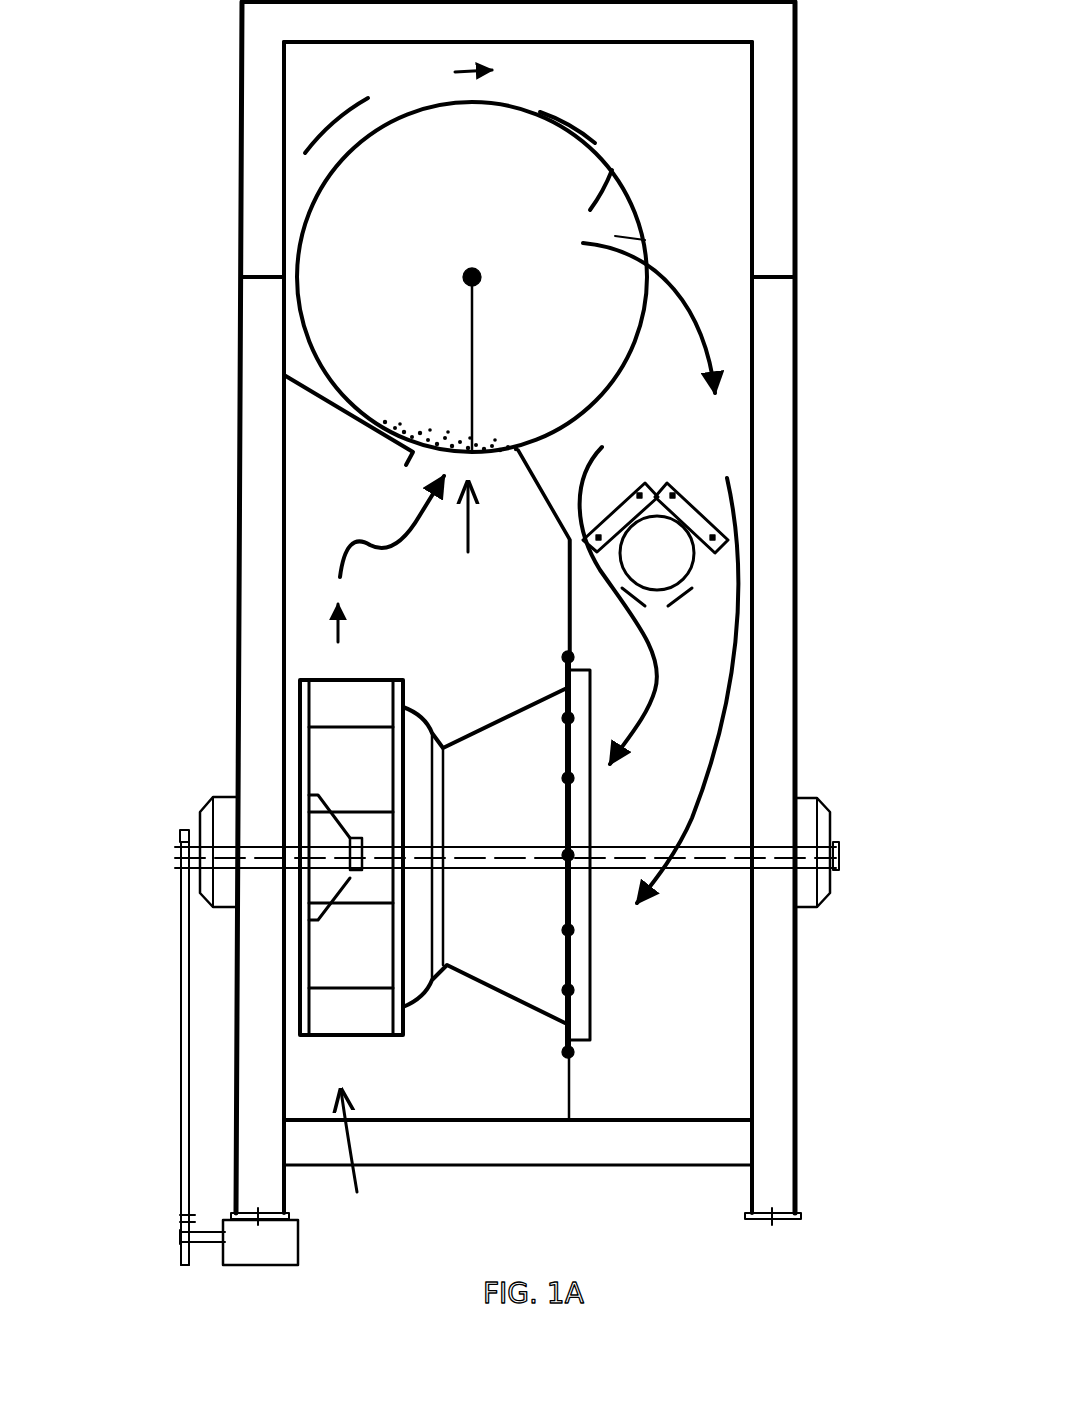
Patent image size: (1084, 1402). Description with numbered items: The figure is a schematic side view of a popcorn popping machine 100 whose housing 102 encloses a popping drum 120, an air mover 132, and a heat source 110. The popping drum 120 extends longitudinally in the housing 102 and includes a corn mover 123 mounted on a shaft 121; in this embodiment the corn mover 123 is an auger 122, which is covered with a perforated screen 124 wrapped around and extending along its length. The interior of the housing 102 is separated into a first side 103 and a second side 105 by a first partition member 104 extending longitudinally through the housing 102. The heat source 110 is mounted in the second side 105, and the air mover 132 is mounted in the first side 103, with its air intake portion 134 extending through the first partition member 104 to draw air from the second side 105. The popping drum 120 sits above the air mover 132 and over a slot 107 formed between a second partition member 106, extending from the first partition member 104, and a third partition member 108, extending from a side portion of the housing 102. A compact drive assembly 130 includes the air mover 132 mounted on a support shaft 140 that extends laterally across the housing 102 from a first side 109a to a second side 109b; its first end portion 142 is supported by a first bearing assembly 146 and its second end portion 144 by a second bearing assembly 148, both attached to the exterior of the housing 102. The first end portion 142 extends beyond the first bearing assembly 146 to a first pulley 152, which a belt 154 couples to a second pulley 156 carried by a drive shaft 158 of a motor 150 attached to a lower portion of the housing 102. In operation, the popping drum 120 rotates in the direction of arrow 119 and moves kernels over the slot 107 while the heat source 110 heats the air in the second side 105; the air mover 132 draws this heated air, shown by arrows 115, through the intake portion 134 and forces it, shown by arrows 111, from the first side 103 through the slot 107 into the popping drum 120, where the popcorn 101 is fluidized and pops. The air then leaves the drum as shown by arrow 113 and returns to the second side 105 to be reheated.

The popcorn popping machine 100 is at (142, 126).
The popcorn 101 is at (412, 422).
The housing 102 is at (778, 345).
The first side 103 is at (448, 1073).
The first partition member 104 is at (568, 598).
The second side 105 is at (698, 983).
The second partition member 106 is at (548, 508).
The slot 107 is at (461, 532).
The third partition member 108 is at (327, 400).
The first side of housing 109a is at (256, 600).
The second side of housing 109b is at (774, 968).
The heat source 110 is at (680, 562).
The arrows indicating heated air 111 is at (380, 540).
The arrow indicating air exiting drum 113 is at (649, 318).
The arrows indicating heated air drawn in 115 is at (645, 672).
The arrow indicating rotation direction 119 is at (330, 130).
The popping drum 120 is at (583, 115).
The shaft 121 is at (473, 270).
The auger 122 is at (590, 210).
The corn mover 123 is at (615, 236).
The screen 124 is at (595, 143).
The drive assembly 130 is at (364, 1156).
The air mover 132 is at (516, 985).
The air intake portion 134 is at (592, 1018).
The support shaft 140 is at (696, 878).
The first end portion 142 is at (200, 848).
The second end portion 144 is at (812, 862).
The first bearing assembly 146 is at (216, 796).
The second bearing assembly 148 is at (810, 808).
The motor 150 is at (300, 1256).
The first pulley 152 is at (182, 875).
The belt 154 is at (183, 1076).
The second pulley 156 is at (182, 1256).
The drive shaft 158 is at (208, 1245).